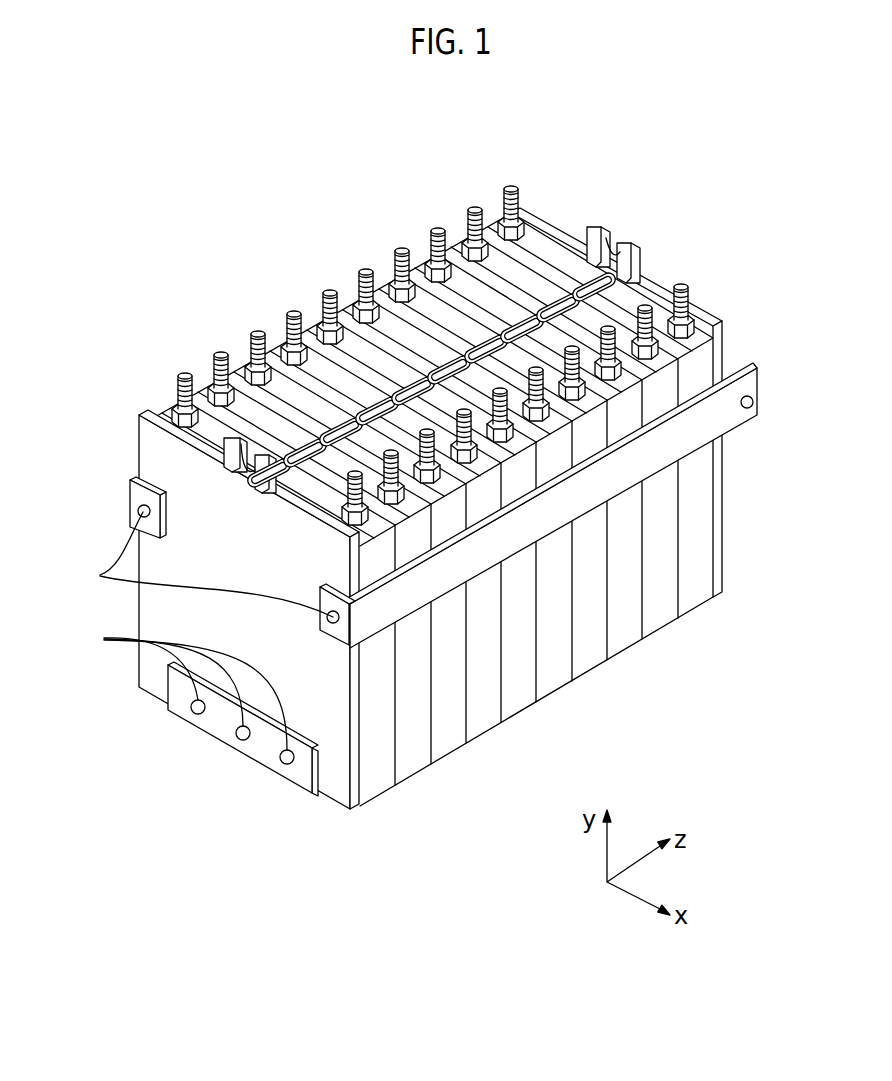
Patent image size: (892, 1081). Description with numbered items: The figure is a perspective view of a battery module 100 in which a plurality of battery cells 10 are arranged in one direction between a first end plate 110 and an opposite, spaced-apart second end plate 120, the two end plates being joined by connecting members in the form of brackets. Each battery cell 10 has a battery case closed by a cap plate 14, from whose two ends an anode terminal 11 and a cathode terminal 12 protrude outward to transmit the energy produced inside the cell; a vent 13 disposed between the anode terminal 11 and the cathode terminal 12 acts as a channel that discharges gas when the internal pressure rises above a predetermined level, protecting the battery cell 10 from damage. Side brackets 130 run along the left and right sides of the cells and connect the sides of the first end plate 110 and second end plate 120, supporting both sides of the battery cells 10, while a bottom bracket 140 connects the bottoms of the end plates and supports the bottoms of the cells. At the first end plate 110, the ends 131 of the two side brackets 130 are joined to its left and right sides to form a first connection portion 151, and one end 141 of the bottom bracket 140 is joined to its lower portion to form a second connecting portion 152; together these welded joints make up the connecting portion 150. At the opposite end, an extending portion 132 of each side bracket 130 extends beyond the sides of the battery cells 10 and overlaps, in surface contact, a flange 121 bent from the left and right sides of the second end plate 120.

The battery module 100 is at (230, 212).
The battery cell 10 is at (661, 601).
The anode terminal 11 is at (512, 206).
The cathode terminal 12 is at (688, 296).
The vent 13 is at (596, 286).
The cap plate 14 is at (702, 338).
The first end plate 110 is at (173, 428).
The second end plate 120 is at (733, 517).
The flange 121 is at (751, 369).
The side bracket 130 is at (130, 501).
The end of side bracket 131 is at (147, 495).
The extending portion 132 is at (744, 410).
The bottom bracket 140 is at (238, 766).
The end of bottom bracket 141 is at (297, 786).
The connecting portion 150 is at (65, 563).
The first connection portion 151 is at (199, 564).
The second connecting portion 152 is at (176, 686).